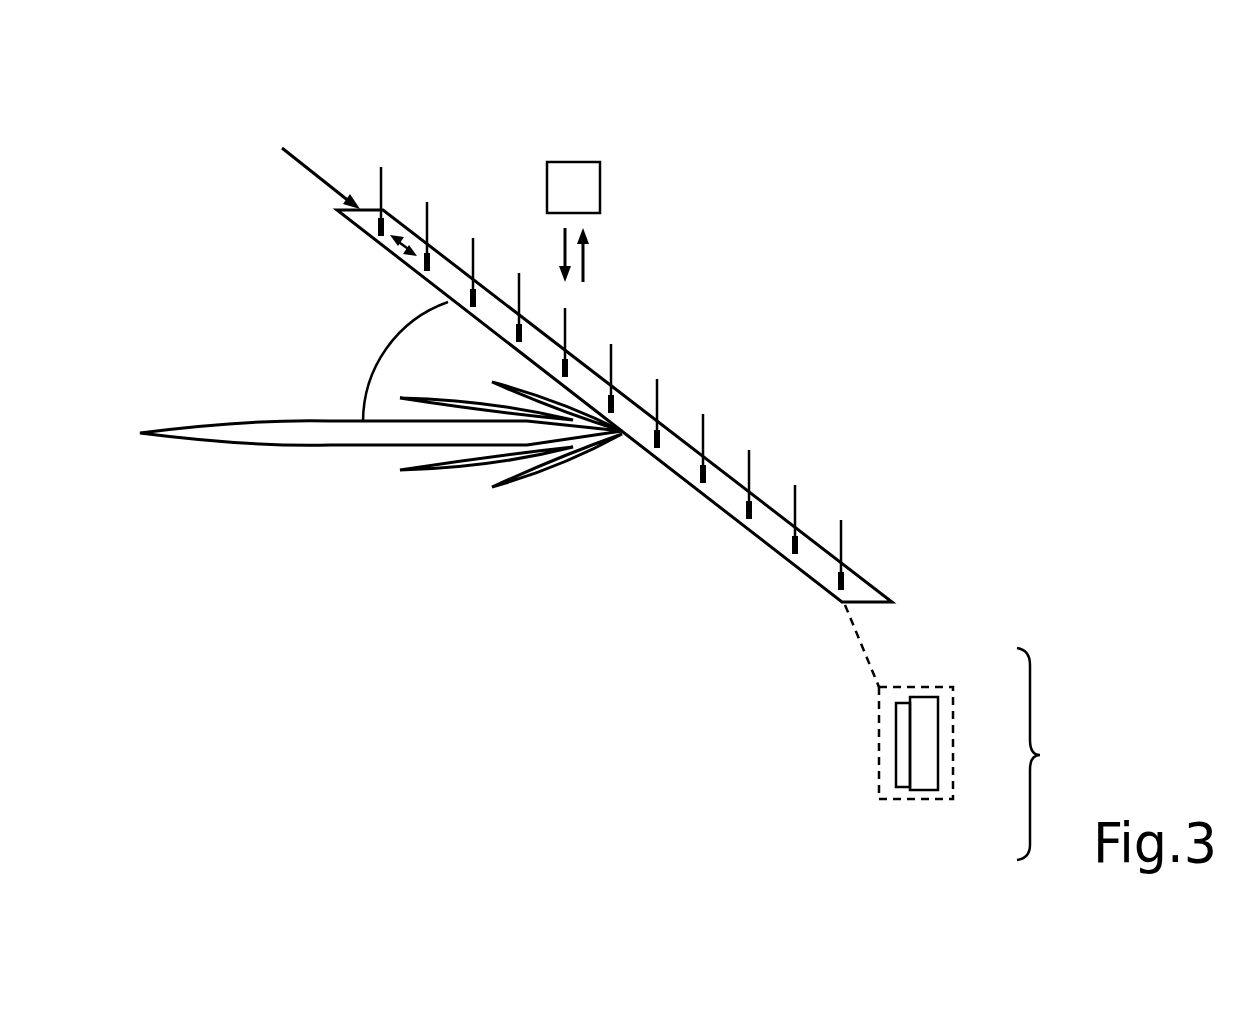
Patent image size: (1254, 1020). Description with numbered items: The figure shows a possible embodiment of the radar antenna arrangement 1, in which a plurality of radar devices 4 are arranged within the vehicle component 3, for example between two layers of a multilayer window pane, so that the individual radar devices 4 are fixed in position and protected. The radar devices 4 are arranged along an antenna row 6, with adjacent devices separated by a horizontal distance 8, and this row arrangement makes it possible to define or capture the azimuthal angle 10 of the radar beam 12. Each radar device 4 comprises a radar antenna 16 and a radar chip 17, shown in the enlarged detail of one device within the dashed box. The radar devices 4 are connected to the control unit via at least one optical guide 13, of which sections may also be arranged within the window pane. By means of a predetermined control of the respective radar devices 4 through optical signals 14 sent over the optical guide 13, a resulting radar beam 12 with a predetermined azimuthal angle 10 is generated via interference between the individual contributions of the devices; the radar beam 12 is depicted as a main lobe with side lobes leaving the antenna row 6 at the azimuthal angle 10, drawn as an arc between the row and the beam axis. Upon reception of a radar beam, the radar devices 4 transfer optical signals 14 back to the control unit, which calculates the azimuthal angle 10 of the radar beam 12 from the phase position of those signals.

The radar antenna arrangement 1 is at (178, 114).
The vehicle component 3 is at (393, 216).
The radar device 4 is at (879, 744).
The antenna row 6 is at (313, 170).
The horizontal distance 8 is at (403, 245).
The azimuthal angle 10 is at (384, 349).
The radar beam 12 is at (342, 490).
The optical guide 13 is at (843, 538).
The optical signal 14 is at (592, 203).
The radar antenna 16 is at (900, 788).
The radar chip 17 is at (922, 790).